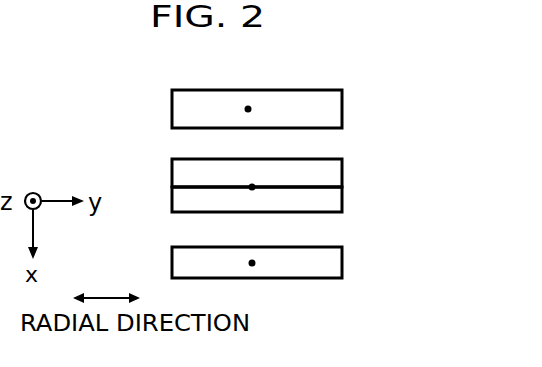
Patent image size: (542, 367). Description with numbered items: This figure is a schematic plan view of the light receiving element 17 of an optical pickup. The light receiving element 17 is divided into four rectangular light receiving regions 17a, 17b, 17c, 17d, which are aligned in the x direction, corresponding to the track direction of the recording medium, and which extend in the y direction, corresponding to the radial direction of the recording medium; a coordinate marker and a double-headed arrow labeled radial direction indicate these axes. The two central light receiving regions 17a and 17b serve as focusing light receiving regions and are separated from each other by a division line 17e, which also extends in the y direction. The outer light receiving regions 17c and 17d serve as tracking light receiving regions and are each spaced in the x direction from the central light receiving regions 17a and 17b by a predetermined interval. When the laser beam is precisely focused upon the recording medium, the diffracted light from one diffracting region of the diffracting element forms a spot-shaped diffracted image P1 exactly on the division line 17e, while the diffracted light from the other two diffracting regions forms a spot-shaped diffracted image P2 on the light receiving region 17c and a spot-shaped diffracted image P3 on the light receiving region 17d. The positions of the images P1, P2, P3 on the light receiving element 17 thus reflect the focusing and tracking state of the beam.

The light receiving element 17 is at (156, 128).
The light receiving region 17a is at (338, 167).
The light receiving region 17b is at (340, 199).
The light receiving region 17c is at (342, 103).
The light receiving region 17d is at (340, 258).
The division line 17e is at (172, 187).
The diffracted image P1 is at (252, 187).
The diffracted image P2 is at (248, 109).
The diffracted image P3 is at (252, 263).